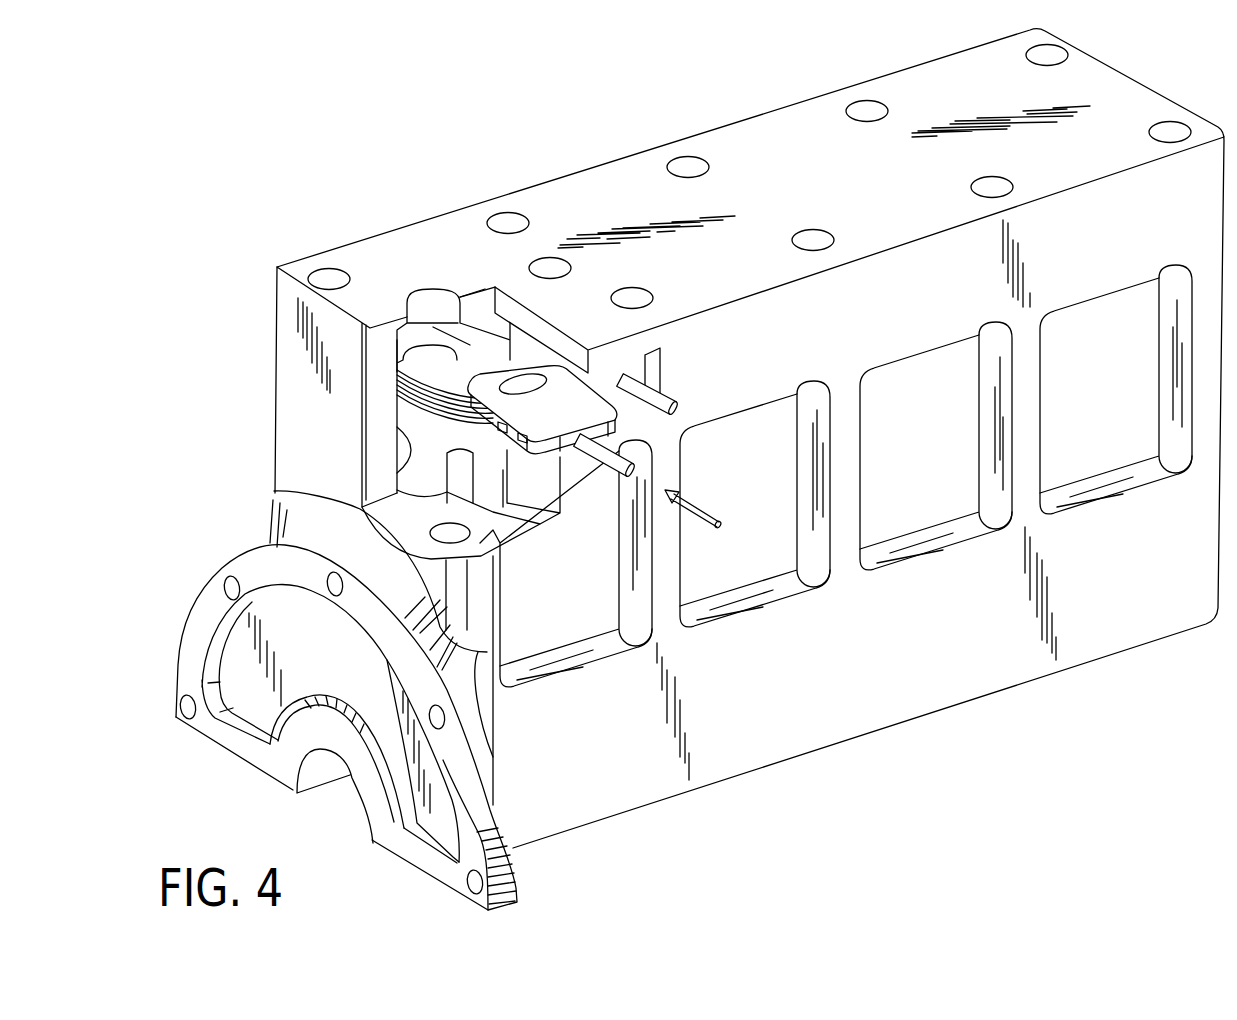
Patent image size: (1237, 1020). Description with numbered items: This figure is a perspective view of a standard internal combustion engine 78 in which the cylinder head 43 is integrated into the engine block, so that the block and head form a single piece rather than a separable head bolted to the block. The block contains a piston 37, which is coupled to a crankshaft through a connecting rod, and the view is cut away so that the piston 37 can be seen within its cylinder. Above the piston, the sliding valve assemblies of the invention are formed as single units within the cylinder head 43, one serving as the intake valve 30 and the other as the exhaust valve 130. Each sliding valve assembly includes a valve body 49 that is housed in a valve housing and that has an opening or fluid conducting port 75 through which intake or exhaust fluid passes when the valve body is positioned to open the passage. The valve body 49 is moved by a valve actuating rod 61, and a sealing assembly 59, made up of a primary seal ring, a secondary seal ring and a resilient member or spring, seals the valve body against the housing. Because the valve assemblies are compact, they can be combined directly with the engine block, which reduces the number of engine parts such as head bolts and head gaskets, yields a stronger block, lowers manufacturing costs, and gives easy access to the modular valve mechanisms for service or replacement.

The cylinder head 43 is at (745, 203).
The internal combustion engine 78 is at (866, 318).
The intake valve 30 is at (485, 372).
The piston 37 is at (423, 433).
The sealing assembly 59 is at (490, 438).
The valve body 49 is at (460, 381).
The fluid conducting port 75 is at (528, 380).
The exhaust valve 130 is at (637, 377).
The valve actuating rod 61 is at (677, 398).